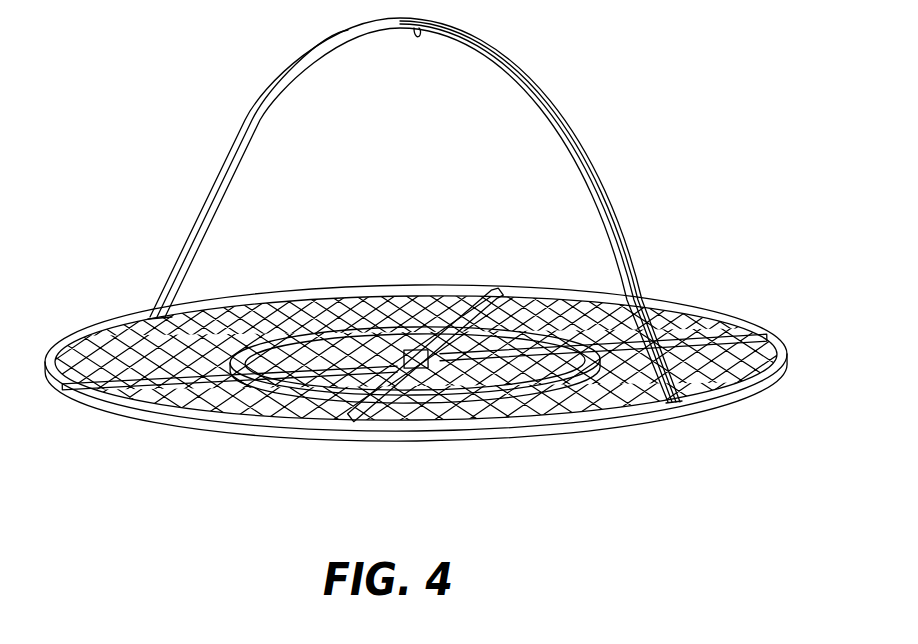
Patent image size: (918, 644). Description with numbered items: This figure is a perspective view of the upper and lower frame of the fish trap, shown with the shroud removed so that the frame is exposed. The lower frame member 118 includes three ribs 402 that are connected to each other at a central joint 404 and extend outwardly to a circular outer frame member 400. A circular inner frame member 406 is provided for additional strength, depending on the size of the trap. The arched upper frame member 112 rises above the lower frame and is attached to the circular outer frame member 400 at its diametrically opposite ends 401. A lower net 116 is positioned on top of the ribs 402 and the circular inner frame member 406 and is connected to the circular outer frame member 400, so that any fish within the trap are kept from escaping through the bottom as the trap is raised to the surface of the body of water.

The upper frame member 112 is at (530, 80).
The lower net 116 is at (258, 302).
The lower frame member 118 is at (422, 322).
The circular outer frame member 400 is at (745, 406).
The diametrically opposite ends 401 is at (142, 281).
The ribs 402 is at (112, 366).
The central joint 404 is at (414, 350).
The circular inner frame members 406 is at (268, 398).